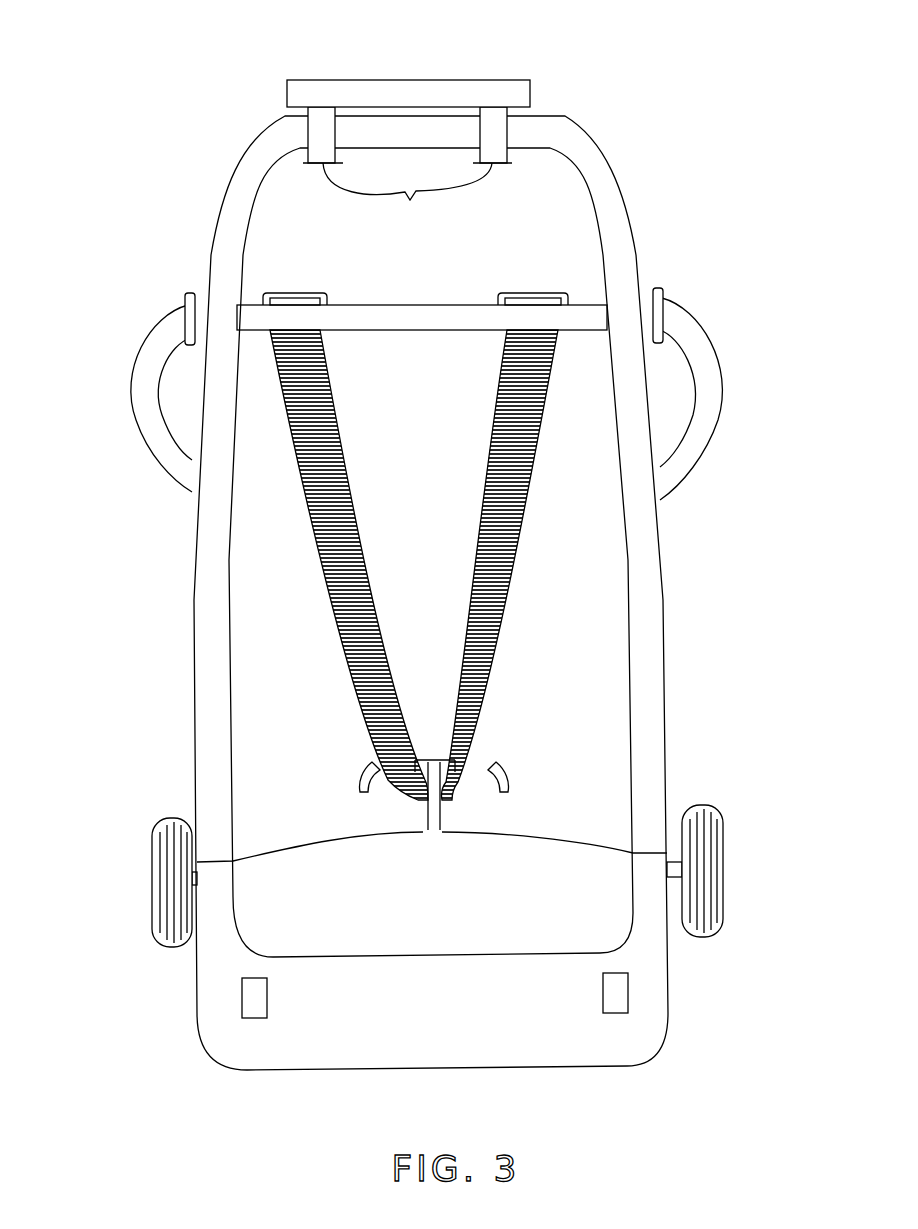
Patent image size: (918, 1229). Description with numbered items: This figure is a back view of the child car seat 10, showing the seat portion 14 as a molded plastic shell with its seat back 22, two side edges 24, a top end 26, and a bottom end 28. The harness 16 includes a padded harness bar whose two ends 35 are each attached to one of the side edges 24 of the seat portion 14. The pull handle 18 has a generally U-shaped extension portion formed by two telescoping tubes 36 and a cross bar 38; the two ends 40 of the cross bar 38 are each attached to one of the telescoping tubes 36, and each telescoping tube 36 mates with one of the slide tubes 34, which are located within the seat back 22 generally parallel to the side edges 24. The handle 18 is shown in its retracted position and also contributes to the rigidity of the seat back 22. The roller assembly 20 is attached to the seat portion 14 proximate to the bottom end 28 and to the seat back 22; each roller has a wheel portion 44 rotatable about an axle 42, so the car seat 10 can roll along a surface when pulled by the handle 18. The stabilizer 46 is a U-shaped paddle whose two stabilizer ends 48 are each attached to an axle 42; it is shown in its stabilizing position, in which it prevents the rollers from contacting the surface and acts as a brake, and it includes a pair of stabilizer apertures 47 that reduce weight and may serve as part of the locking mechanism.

The child car seat 10 is at (690, 633).
The seat portion 14 is at (189, 587).
The harness 16 is at (493, 415).
The pull handle 18 is at (358, 72).
The roller assembly 20 is at (729, 931).
The seat back 22 is at (552, 680).
The side edges 24 is at (193, 695).
The top end 26 is at (557, 113).
The bottom end 28 is at (575, 843).
The slide tubes 34 is at (416, 496).
The harness bar ends 35 is at (170, 328).
The telescoping tubes 36 is at (317, 117).
The cross bar 38 is at (390, 78).
The cross bar ends 40 is at (532, 90).
The axle 42 is at (668, 840).
The wheel portion 44 is at (177, 947).
The stabilizer 46 is at (392, 1055).
The stabilizer apertures 47 is at (255, 1000).
The stabilizer ends 48 is at (223, 893).